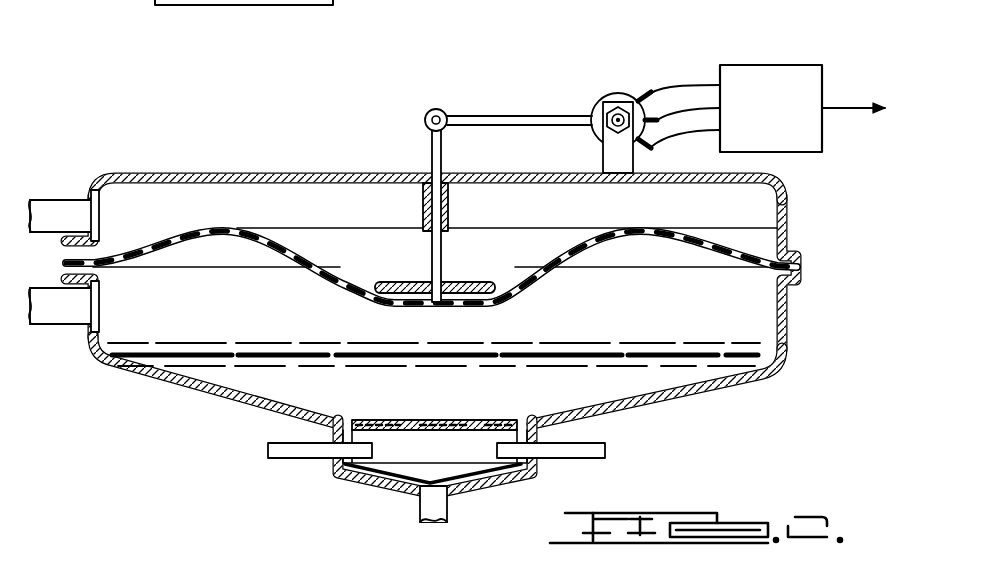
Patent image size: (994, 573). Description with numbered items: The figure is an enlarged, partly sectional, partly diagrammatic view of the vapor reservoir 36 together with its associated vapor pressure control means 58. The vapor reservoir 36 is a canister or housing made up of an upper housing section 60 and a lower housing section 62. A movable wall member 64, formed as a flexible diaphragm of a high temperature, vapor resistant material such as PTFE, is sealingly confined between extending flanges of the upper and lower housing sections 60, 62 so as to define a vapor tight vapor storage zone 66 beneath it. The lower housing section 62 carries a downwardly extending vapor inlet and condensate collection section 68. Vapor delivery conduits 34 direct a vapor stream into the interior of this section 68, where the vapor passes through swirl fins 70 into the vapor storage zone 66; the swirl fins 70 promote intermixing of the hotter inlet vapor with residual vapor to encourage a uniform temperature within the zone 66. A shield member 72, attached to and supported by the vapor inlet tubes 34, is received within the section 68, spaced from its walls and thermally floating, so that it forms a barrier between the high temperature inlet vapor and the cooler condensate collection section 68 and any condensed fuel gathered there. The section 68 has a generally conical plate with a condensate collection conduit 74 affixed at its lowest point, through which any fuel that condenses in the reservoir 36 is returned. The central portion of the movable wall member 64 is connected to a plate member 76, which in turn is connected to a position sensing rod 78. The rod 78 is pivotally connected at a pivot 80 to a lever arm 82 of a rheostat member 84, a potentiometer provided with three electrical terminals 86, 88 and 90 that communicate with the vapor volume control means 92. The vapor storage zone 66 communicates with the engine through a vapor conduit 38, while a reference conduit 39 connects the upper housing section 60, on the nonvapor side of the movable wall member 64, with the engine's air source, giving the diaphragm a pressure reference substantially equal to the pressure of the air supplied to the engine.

The vapor delivery conduits 34 is at (268, 451).
The vapor reservoir 36 is at (793, 222).
The vapor conduit 38 is at (55, 321).
The reference conduit 39 is at (44, 201).
The vapor pressure control means 58 is at (706, 58).
The upper housing section 60 is at (207, 174).
The lower housing section 62 is at (168, 381).
The movable wall member 64 is at (140, 248).
The vapor storage zone 66 is at (650, 318).
The vapor inlet and condensate collection section 68 is at (427, 456).
The swirl fins 70 is at (438, 420).
The shield member 72 is at (496, 484).
The condensate collection conduit 74 is at (420, 508).
The plate member 76 is at (470, 283).
The position sensing rod 78 is at (430, 150).
The pivot 80 is at (436, 109).
The lever arm 82 is at (491, 115).
The rheostat member 84 is at (605, 96).
The electrical terminal 86 is at (650, 97).
The electrical terminal 88 is at (665, 123).
The electrical terminal 90 is at (648, 148).
The vapor volume control means 92 is at (768, 67).